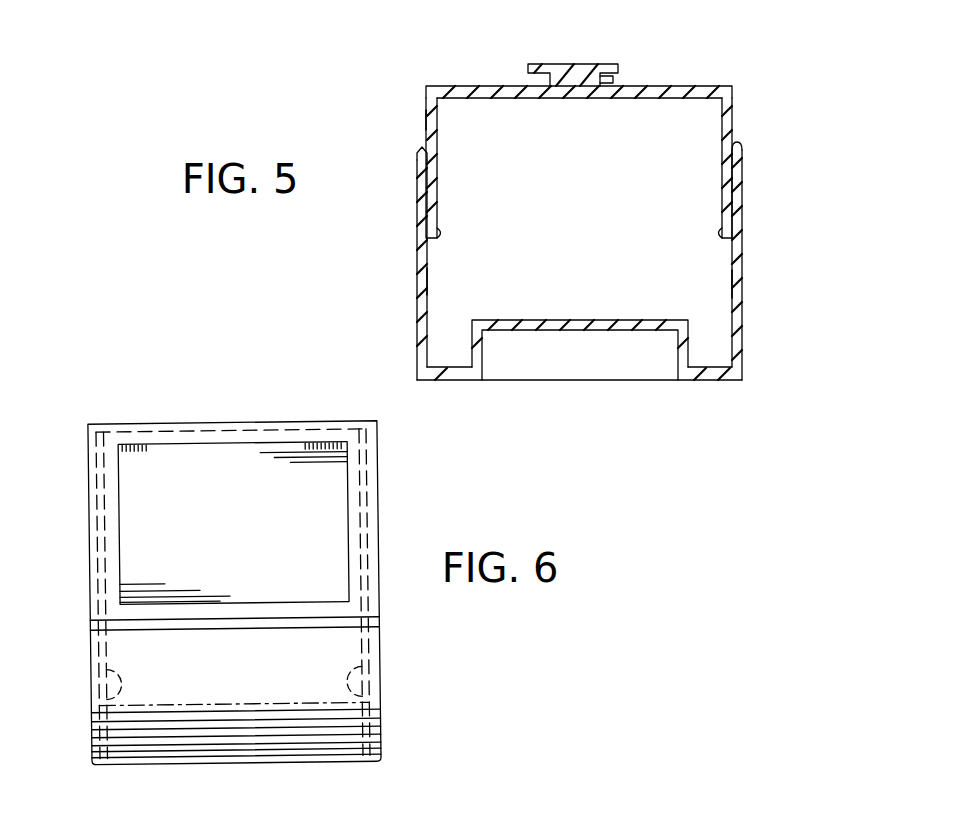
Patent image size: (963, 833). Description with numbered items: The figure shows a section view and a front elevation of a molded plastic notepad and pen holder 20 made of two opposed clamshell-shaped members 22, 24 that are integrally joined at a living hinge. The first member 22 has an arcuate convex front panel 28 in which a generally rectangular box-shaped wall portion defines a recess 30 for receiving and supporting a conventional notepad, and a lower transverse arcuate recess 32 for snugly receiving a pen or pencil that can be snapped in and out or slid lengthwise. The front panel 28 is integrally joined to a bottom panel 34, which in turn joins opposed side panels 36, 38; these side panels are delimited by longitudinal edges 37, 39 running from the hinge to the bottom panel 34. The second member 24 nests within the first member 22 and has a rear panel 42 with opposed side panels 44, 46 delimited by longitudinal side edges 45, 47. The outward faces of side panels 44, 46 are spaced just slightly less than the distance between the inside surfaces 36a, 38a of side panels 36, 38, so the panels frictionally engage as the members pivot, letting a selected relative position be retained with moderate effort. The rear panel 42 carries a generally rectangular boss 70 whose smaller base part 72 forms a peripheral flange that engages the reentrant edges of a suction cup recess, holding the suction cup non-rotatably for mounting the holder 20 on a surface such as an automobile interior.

In FIG. 5, the notepad holder 20 is at (760, 124).
In FIG. 6, the notepad holder 20 is at (173, 392).
In FIG. 5, the clamshell-shaped member 22 is at (724, 392).
In FIG. 5, the clamshell-shaped member 24 is at (712, 76).
In FIG. 5, the front panel 28 is at (460, 381).
In FIG. 6, the front panel 28 is at (110, 530).
In FIG. 5, the recess 30 is at (590, 361).
In FIG. 6, the recess 30 is at (220, 526).
In FIG. 6, the recess 32 is at (232, 622).
In FIG. 6, the bottom panel 34 is at (285, 724).
In FIG. 5, the side panel 36 is at (745, 290).
In FIG. 6, the side panel 36 is at (380, 645).
In FIG. 5, the inside surface 36a is at (732, 285).
In FIG. 5, the longitudinal edge 37 is at (745, 150).
In FIG. 5, the side panel 38 is at (418, 300).
In FIG. 6, the side panel 38 is at (90, 655).
In FIG. 5, the inside surface 38a is at (428, 280).
In FIG. 5, the longitudinal edge 39 is at (418, 143).
In FIG. 5, the rear panel 42 is at (483, 86).
In FIG. 5, the side panel 44 is at (735, 100).
In FIG. 6, the side panel 44 is at (379, 708).
In FIG. 5, the longitudinal side edge 45 is at (728, 238).
In FIG. 5, the side panel 46 is at (426, 122).
In FIG. 6, the side panel 46 is at (90, 707).
In FIG. 5, the longitudinal side edge 47 is at (438, 233).
In FIG. 5, the rectangular boss 70 is at (580, 64).
In FIG. 5, the base part 72 is at (604, 88).